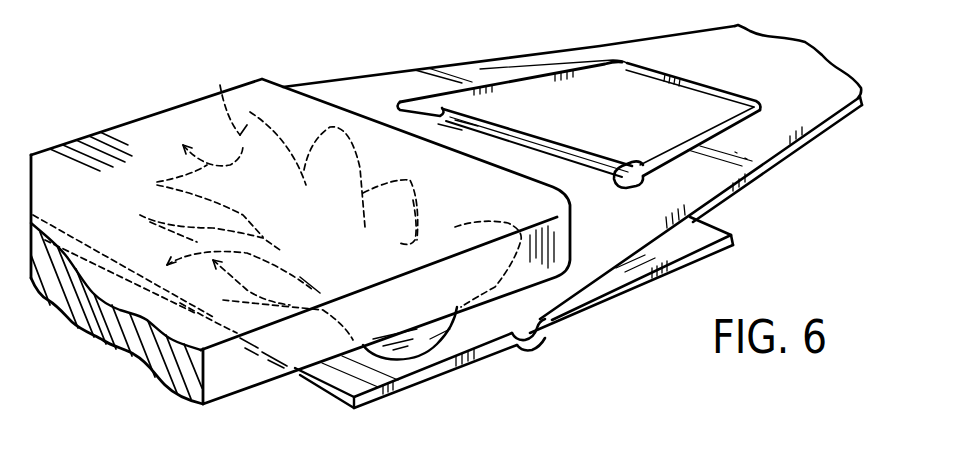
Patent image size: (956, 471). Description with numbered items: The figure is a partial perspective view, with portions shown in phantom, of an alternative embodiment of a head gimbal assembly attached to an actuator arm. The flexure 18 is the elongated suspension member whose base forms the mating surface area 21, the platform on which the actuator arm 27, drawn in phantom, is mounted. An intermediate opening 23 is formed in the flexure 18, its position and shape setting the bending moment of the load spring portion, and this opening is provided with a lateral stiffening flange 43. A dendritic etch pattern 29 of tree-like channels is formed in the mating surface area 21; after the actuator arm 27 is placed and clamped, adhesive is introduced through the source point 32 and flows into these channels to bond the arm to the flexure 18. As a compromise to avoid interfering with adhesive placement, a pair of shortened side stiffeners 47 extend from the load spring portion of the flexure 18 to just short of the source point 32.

The flexure 18 is at (813, 97).
The mating surface area 21 is at (498, 330).
The intermediate opening 23 is at (602, 62).
The actuator arm 27 is at (123, 143).
The dendritic etch pattern 29 is at (220, 90).
The source point 32 is at (413, 341).
The lateral stiffening flange 43 is at (553, 133).
The shortened side stiffeners 47 is at (707, 233).